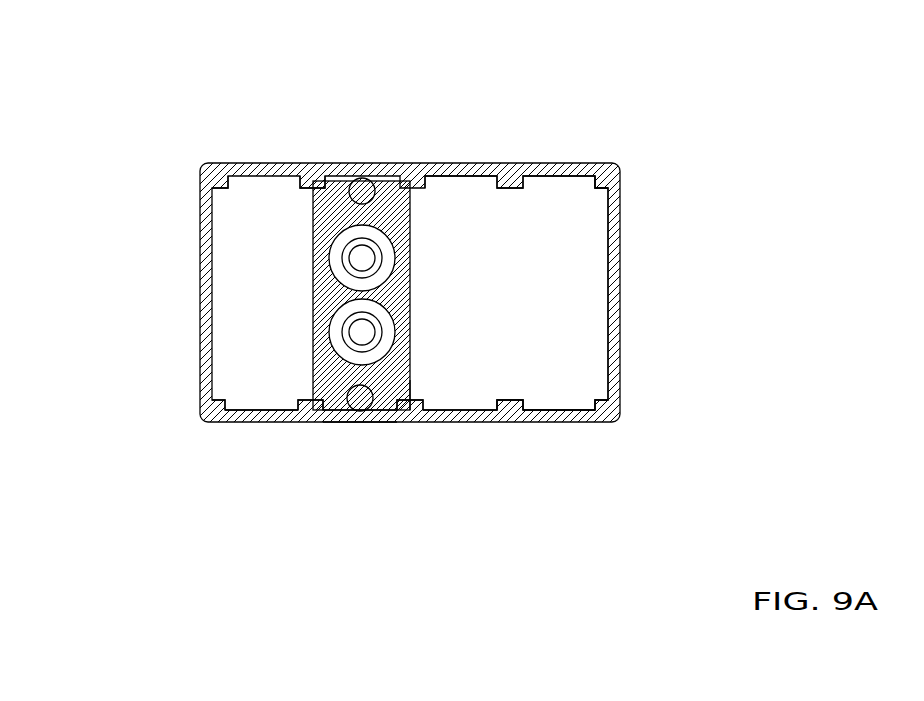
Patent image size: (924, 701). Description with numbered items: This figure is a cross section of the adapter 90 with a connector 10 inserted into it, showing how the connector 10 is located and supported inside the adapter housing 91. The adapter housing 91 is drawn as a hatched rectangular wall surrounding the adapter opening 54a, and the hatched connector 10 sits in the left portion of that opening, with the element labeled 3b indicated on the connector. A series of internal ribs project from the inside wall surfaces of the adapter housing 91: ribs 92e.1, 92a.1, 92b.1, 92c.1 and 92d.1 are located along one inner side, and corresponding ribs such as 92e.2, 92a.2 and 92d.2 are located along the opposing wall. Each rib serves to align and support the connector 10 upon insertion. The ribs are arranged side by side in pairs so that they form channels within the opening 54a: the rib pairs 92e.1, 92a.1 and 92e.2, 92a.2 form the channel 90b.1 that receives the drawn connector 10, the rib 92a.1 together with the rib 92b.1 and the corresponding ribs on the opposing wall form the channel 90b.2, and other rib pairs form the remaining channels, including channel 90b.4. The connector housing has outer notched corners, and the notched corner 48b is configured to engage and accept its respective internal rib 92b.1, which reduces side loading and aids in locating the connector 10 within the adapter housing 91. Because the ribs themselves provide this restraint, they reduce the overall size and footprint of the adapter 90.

The adapter 90 is at (98, 76).
The adapter housing 91 is at (208, 211).
The connector 10 is at (330, 297).
The optical element 3b is at (412, 242).
The notched corner 48b is at (402, 397).
The adapter opening 54a is at (565, 243).
The channel 90b.1 is at (265, 390).
The channel 90b.2 is at (363, 419).
The channel 90b.4 is at (562, 410).
The internal rib 92a.1 is at (312, 408).
The internal rib 92a.2 is at (318, 179).
The internal rib 92b.1 is at (402, 410).
The internal rib 92c.1 is at (510, 412).
The internal rib 92d.1 is at (600, 410).
The internal rib 92d.2 is at (612, 180).
The internal rib 92e.1 is at (212, 406).
The internal rib 92e.2 is at (218, 178).